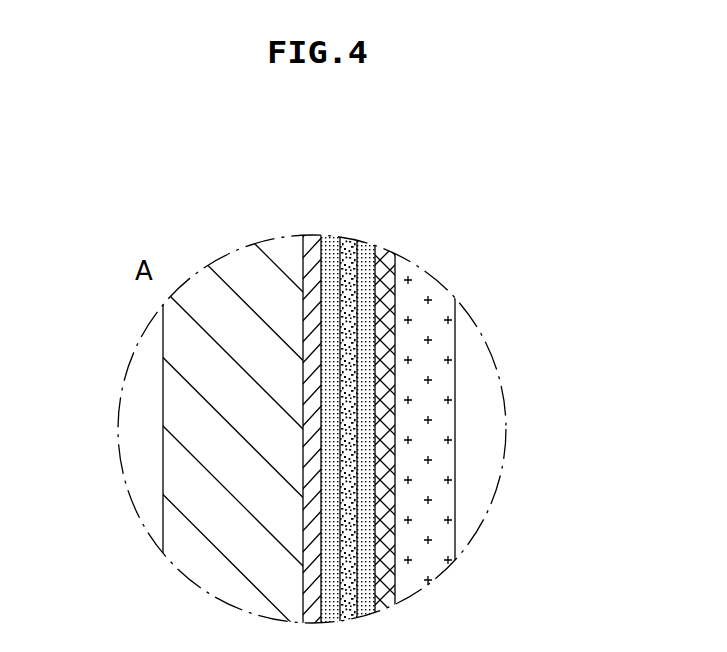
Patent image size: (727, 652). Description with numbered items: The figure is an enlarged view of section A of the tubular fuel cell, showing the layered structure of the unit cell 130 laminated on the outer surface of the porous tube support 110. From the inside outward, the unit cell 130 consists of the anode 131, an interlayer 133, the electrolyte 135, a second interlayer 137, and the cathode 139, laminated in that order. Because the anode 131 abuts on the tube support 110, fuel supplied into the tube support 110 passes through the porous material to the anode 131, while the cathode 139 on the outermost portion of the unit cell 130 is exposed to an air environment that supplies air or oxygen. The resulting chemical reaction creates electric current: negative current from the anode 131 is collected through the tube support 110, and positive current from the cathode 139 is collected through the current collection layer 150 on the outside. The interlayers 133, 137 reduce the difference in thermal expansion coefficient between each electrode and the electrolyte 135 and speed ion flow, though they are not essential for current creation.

The tube support 110 is at (212, 452).
The unit cell 130 is at (378, 384).
The anode 131 is at (312, 237).
The interlayer 133 is at (334, 240).
The electrolyte 135 is at (348, 240).
The interlayer 137 is at (368, 243).
The cathode 139 is at (442, 410).
The current collection layer 150 is at (430, 430).